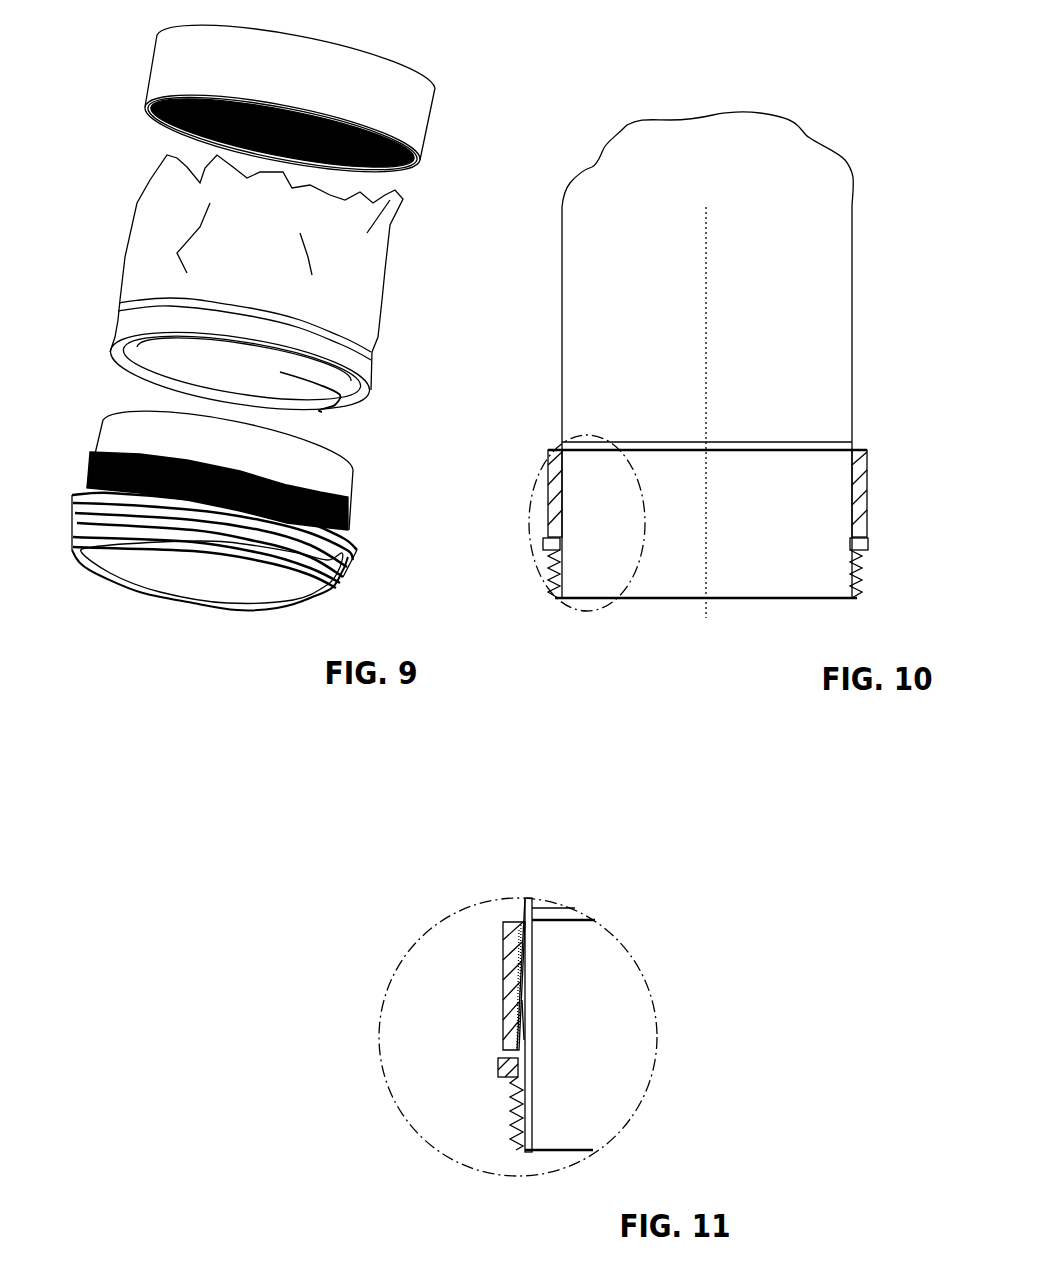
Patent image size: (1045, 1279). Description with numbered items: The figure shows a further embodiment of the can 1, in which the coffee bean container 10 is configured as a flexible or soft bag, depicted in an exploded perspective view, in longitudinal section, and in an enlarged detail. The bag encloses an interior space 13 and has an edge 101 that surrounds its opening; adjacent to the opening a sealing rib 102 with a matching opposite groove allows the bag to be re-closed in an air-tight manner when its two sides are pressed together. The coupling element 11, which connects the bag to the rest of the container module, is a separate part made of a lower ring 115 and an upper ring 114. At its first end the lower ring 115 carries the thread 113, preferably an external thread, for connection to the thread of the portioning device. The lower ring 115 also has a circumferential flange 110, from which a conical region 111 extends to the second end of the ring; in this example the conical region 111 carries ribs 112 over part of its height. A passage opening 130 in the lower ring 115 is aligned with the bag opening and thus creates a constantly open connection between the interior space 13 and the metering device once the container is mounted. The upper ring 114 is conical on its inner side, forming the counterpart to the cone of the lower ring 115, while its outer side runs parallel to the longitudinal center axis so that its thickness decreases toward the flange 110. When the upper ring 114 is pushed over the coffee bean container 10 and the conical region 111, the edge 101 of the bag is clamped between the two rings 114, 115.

In FIG. 10, the can 1 is at (710, 314).
In FIG. 9, the coffee bean container 10 is at (378, 287).
In FIG. 10, the coffee bean container 10 is at (853, 295).
In FIG. 11, the coffee bean container 10 is at (527, 900).
In FIG. 10, the coupling element 11 is at (527, 502).
In FIG. 11, the coupling element 11 is at (378, 930).
In FIG. 10, the interior space 13 is at (735, 306).
In FIG. 9, the edge 101 is at (367, 372).
In FIG. 11, the edge 101 is at (522, 977).
In FIG. 9, the sealing rib 102 is at (322, 412).
In FIG. 9, the circumferential flange 110 is at (350, 540).
In FIG. 10, the circumferential flange 110 is at (868, 540).
In FIG. 11, the circumferential flange 110 is at (500, 1070).
In FIG. 9, the conical region 111 is at (350, 477).
In FIG. 11, the conical region 111 is at (528, 1018).
In FIG. 9, the ribs 112 is at (348, 513).
In FIG. 11, the ribs 112 is at (517, 1015).
In FIG. 9, the thread 113 is at (347, 570).
In FIG. 10, the thread 113 is at (863, 577).
In FIG. 11, the thread 113 is at (513, 1113).
In FIG. 9, the upper ring 114 is at (423, 113).
In FIG. 10, the upper ring 114 is at (865, 460).
In FIG. 11, the upper ring 114 is at (507, 938).
In FIG. 9, the lower ring 115 is at (229, 516).
In FIG. 9, the passage opening 130 is at (233, 593).
In FIG. 10, the passage opening 130 is at (733, 551).